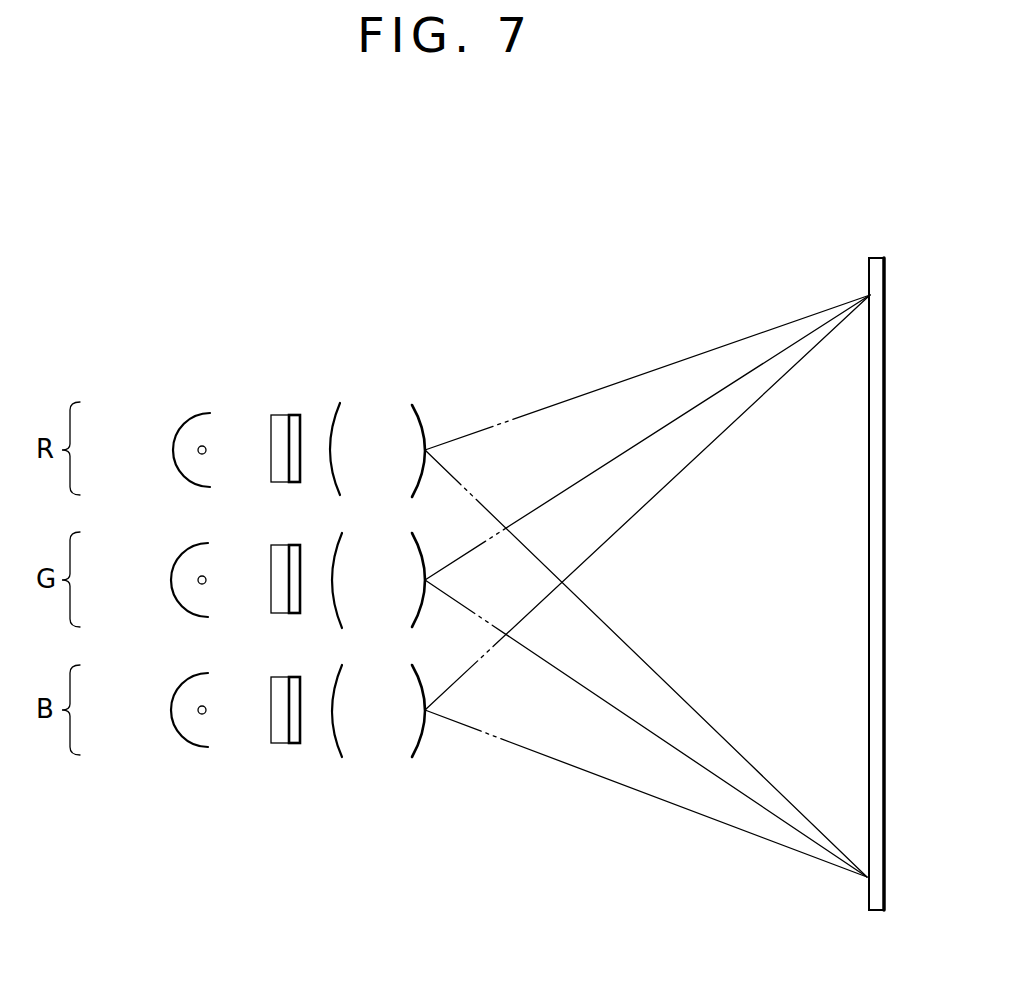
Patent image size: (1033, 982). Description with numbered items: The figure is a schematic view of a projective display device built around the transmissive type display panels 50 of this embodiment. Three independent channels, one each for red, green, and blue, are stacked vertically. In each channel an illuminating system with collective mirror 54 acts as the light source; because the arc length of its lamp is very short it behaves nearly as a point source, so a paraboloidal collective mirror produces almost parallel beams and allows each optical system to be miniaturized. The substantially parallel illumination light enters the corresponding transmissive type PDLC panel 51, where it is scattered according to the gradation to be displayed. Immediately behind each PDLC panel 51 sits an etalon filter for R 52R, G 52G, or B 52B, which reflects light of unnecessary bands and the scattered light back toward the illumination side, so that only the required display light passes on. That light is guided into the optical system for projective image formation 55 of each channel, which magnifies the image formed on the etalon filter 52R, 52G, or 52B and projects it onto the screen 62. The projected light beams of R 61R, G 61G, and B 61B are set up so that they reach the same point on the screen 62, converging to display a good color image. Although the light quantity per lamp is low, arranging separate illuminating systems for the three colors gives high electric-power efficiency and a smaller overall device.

The transmissive type display panel 50 is at (280, 576).
The transmissive type PDLC panel 51 is at (278, 416).
The etalon filter for R 52R is at (295, 416).
The etalon filter for G 52G is at (293, 546).
The etalon filter for B 52B is at (293, 679).
The illuminating system with collective mirror 54 is at (183, 425).
The optical system for projective image formation 55 is at (420, 418).
The projected light beam of R 61R is at (592, 390).
The projected light beam of G 61G is at (680, 413).
The projected light beam of B 61B is at (778, 377).
The screen 62 is at (877, 263).